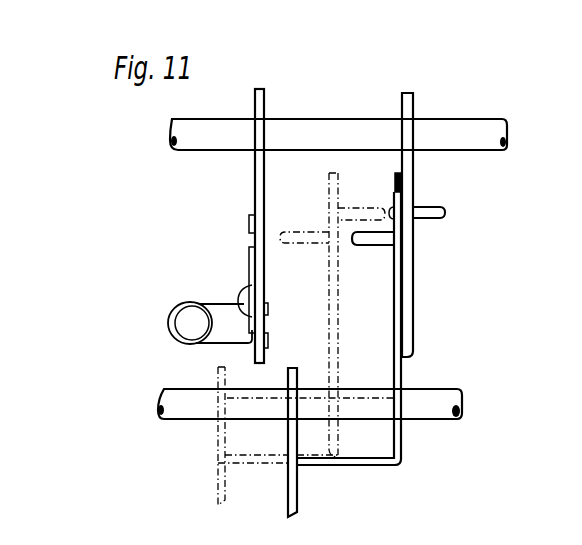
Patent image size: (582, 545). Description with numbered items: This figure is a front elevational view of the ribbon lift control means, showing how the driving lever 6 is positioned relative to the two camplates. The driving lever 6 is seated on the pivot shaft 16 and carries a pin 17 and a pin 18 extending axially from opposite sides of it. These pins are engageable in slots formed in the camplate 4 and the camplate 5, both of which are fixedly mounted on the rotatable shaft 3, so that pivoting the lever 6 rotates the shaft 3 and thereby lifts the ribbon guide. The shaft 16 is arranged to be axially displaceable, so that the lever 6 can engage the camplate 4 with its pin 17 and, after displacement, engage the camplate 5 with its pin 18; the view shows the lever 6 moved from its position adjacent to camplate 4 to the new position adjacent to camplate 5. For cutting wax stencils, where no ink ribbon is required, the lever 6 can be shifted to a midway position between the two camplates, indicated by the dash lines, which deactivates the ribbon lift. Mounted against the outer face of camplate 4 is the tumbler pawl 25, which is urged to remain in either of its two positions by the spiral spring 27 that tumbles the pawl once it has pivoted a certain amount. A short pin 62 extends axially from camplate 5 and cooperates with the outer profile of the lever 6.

The rotatable shaft 3 is at (482, 128).
The camplate 4 is at (257, 183).
The camplate 5 is at (415, 274).
The driving lever 6 is at (334, 359).
The pivot shaft 16 is at (433, 413).
The pin 17 is at (307, 237).
The pin 18 is at (355, 212).
The tumbler pawl 25 is at (250, 262).
The spiral spring 27 is at (170, 318).
The short pin 62 is at (402, 186).